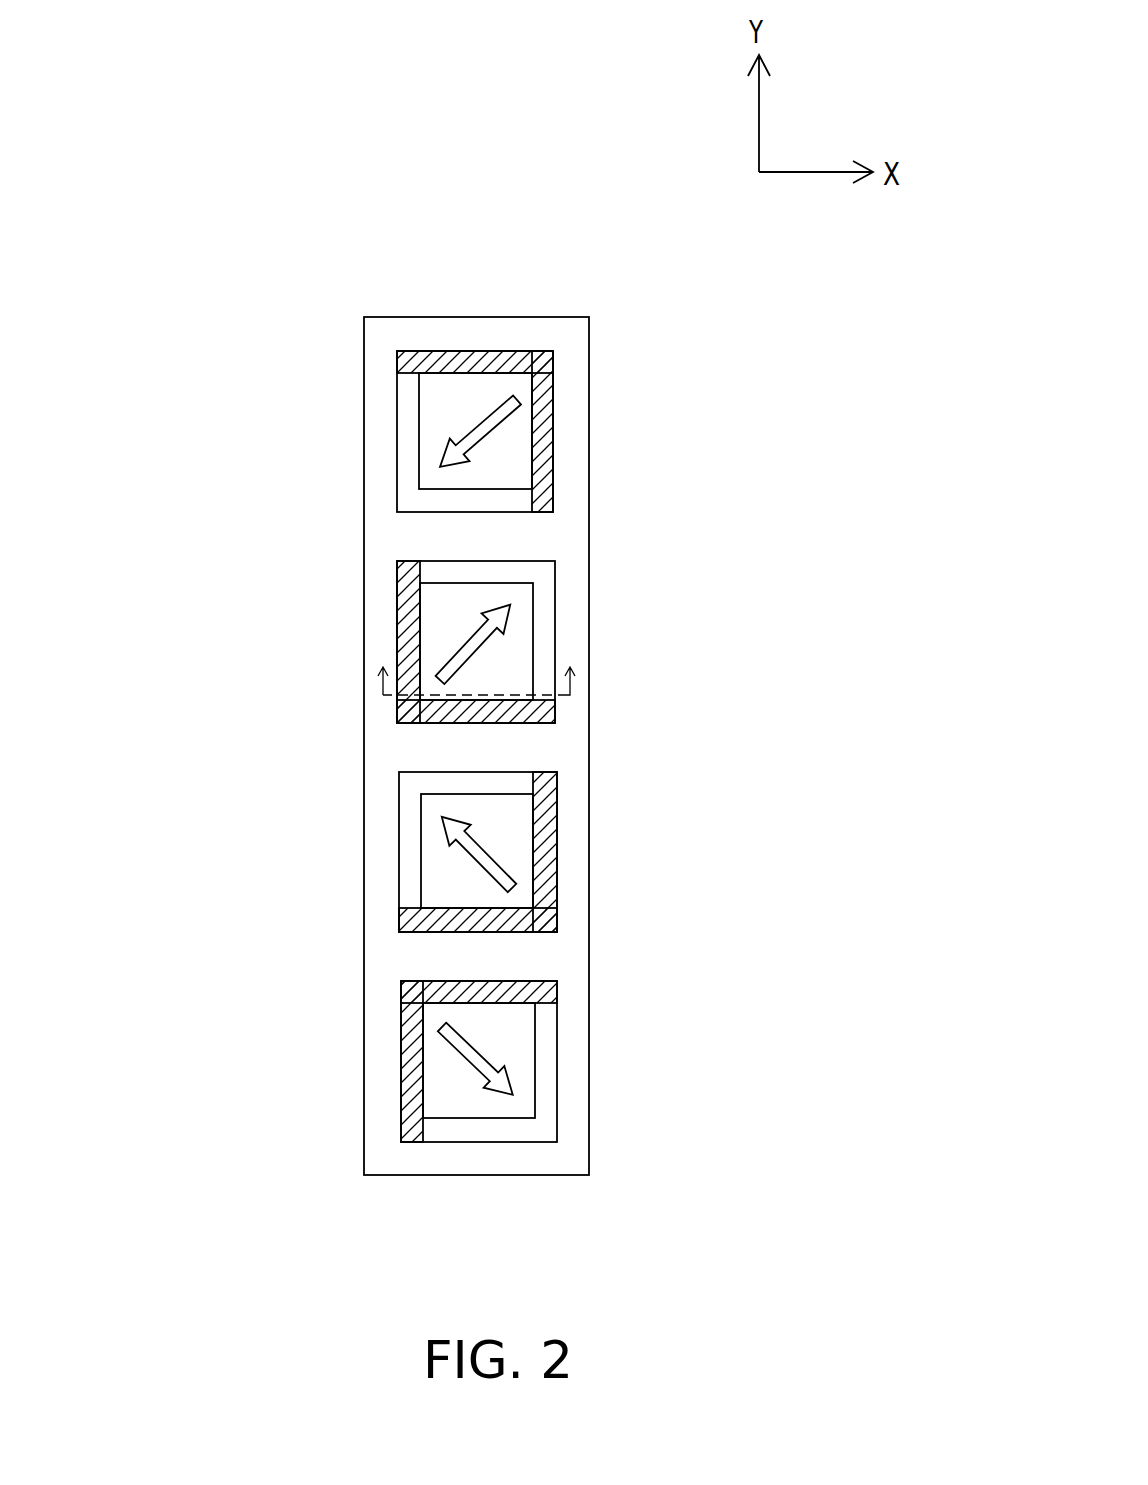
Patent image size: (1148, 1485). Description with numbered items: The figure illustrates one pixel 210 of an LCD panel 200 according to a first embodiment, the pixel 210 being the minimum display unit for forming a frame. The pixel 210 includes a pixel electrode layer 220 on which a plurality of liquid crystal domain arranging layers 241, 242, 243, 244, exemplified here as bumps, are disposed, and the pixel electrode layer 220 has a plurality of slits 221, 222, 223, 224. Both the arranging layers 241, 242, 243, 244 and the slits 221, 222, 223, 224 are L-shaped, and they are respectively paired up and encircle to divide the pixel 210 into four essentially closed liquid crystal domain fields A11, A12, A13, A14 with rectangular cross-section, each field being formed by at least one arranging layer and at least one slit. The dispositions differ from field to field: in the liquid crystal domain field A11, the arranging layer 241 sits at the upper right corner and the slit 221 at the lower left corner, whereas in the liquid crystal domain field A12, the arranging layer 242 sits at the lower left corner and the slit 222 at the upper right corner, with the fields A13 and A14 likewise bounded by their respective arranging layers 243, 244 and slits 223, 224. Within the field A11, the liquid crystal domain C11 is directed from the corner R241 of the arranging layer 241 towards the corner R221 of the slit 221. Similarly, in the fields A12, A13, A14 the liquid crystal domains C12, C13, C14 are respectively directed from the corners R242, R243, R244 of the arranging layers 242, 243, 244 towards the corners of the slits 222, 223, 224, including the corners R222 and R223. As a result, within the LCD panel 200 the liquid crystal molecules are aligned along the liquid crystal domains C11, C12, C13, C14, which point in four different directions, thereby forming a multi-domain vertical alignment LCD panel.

The LCD panel 200 is at (136, 200).
The pixel 210 is at (491, 300).
The pixel electrode layer 220 is at (582, 482).
The slit 221 is at (403, 458).
The slit 222 is at (550, 608).
The slit 223 is at (405, 848).
The slit 224 is at (553, 1042).
The liquid crystal domain arranging layer 241 is at (555, 372).
The liquid crystal domain arranging layer 242 is at (400, 620).
The liquid crystal domain arranging layer 243 is at (553, 795).
The liquid crystal domain arranging layer 244 is at (402, 1107).
The corner of the slit R221 is at (377, 508).
The corner of the slit R222 is at (577, 564).
The corner of the slit R223 is at (379, 793).
The corner of the liquid crystal domain arranging layer R241 is at (570, 336).
The corner of the liquid crystal domain arranging layer R242 is at (379, 723).
The corner of the liquid crystal domain arranging layer R243 is at (578, 928).
The corner of the liquid crystal domain arranging layer R244 is at (382, 1000).
The liquid crystal domain field A11 is at (517, 430).
The liquid crystal domain field A12 is at (518, 648).
The liquid crystal domain field A13 is at (522, 867).
The liquid crystal domain field A14 is at (520, 1107).
The liquid crystal domain C11 is at (650, 430).
The liquid crystal domain C12 is at (651, 644).
The liquid crystal domain C13 is at (653, 852).
The liquid crystal domain C14 is at (654, 1059).